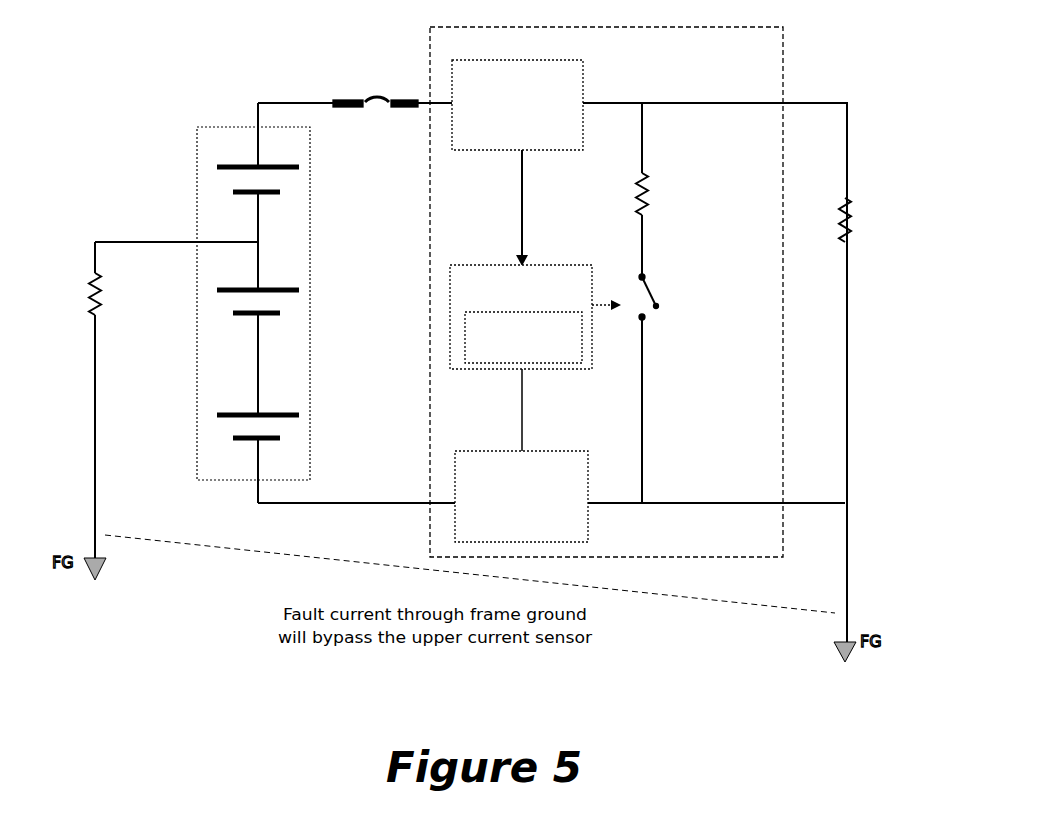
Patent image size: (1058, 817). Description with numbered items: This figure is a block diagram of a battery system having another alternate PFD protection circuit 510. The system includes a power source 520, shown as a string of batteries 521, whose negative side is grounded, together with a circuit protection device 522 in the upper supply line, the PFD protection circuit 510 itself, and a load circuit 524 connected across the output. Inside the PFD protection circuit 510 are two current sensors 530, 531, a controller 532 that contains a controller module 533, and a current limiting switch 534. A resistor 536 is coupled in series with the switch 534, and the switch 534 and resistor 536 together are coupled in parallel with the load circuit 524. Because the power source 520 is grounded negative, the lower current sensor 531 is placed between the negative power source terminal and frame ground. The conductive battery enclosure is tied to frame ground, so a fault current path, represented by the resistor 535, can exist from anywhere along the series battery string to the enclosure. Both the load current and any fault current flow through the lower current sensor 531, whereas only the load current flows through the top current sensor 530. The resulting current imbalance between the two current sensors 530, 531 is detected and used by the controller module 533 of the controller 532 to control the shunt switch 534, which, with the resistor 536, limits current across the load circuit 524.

The PFD protection circuit 510 is at (606, 292).
The power source 520 is at (253, 303).
The string of batteries 521 is at (242, 148).
The circuit protection device 522 is at (360, 73).
The load circuit 524 is at (888, 231).
The current sensor 530 is at (517, 105).
The current sensor 531 is at (521, 496).
The controller 532 is at (521, 317).
The controller module 533 is at (523, 337).
The current limiting switch 534 is at (692, 359).
The resistor 535 is at (118, 293).
The resistor 536 is at (660, 159).